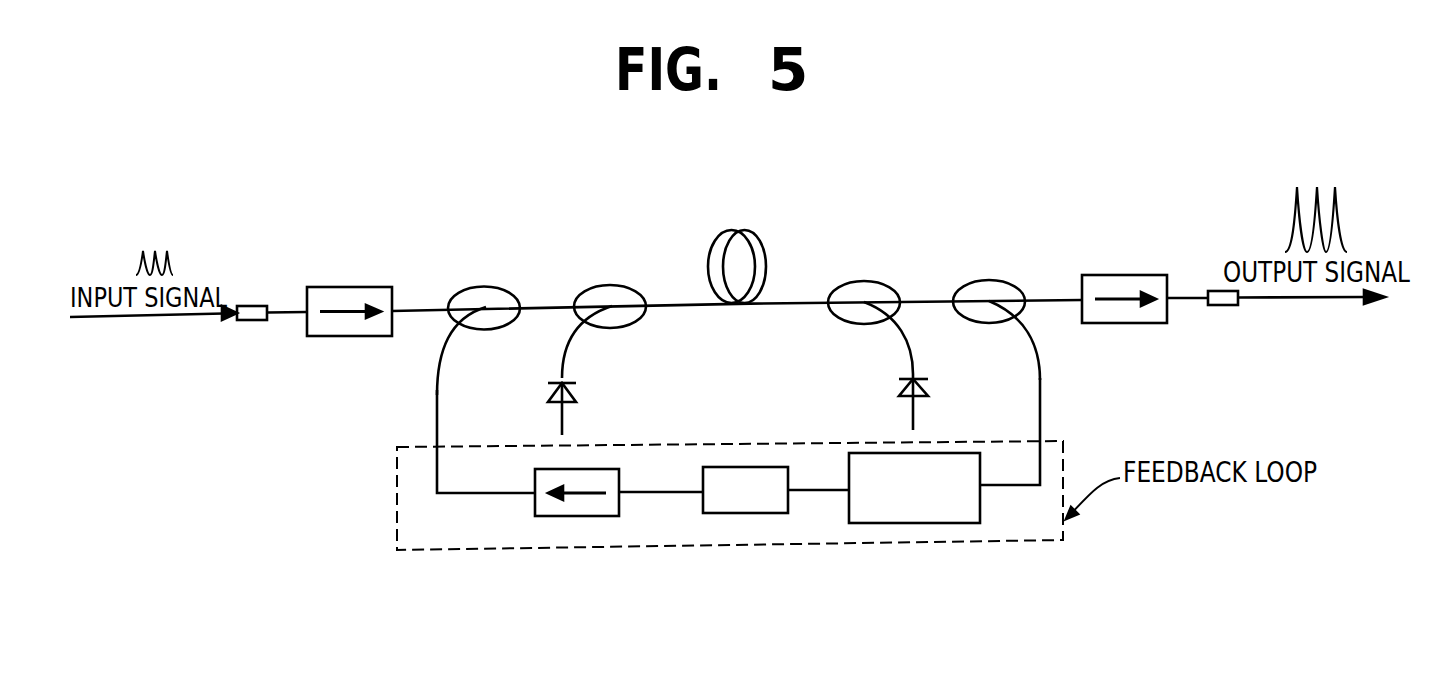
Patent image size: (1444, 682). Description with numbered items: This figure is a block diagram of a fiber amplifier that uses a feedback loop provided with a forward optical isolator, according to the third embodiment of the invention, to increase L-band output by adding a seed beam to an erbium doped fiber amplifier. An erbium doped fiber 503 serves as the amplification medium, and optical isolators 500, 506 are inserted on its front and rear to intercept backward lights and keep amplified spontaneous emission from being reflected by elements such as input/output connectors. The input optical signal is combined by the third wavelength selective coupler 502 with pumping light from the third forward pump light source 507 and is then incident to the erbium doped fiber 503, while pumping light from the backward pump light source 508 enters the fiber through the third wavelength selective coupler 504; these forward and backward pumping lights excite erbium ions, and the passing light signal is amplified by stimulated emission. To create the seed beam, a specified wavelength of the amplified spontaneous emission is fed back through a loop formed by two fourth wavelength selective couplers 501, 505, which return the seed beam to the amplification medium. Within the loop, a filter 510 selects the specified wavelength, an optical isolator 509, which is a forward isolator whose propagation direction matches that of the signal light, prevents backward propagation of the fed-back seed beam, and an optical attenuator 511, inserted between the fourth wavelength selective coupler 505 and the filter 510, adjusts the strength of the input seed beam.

The optical isolator 500 is at (343, 296).
The fourth wavelength selective coupler 501 is at (480, 292).
The third wavelength selective coupler 502 is at (604, 292).
The erbium doped fiber 503 is at (745, 232).
The third wavelength selective coupler 504 is at (867, 285).
The fourth wavelength selective coupler 505 is at (993, 285).
The optical isolator 506 is at (1120, 282).
The third forward pump light source 507 is at (535, 406).
The backward pump light source 508 is at (938, 399).
The optical isolator 509 is at (575, 518).
The filter 510 is at (750, 515).
The optical attenuator 511 is at (918, 525).